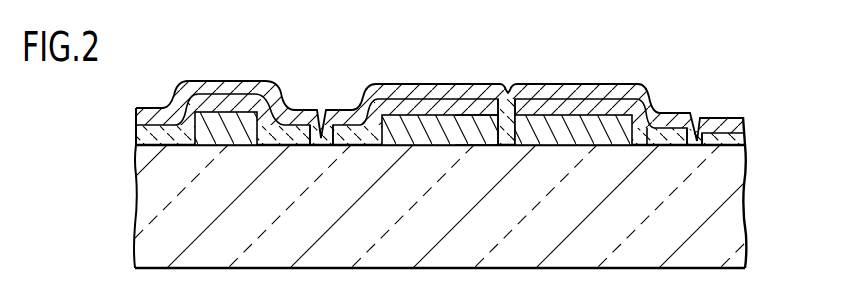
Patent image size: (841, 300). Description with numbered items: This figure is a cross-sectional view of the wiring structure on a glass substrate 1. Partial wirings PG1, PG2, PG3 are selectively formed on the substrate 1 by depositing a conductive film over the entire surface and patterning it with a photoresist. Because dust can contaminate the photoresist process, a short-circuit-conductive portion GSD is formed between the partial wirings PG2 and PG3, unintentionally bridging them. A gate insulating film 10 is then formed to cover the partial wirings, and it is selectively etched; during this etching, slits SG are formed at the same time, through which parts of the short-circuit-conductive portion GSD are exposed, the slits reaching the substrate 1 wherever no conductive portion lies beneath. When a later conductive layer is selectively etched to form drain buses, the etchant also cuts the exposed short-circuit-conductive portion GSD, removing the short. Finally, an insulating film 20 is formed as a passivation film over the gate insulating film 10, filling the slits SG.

The glass substrate 1 is at (697, 208).
The gate insulating film 10 is at (740, 137).
The insulating film 20 is at (737, 117).
The partial wiring PG1 is at (217, 123).
The partial wiring PG2 is at (413, 123).
The partial wiring PG3 is at (578, 130).
The short-circuit-conductive portion GSD is at (473, 125).
The slit SG is at (318, 110).